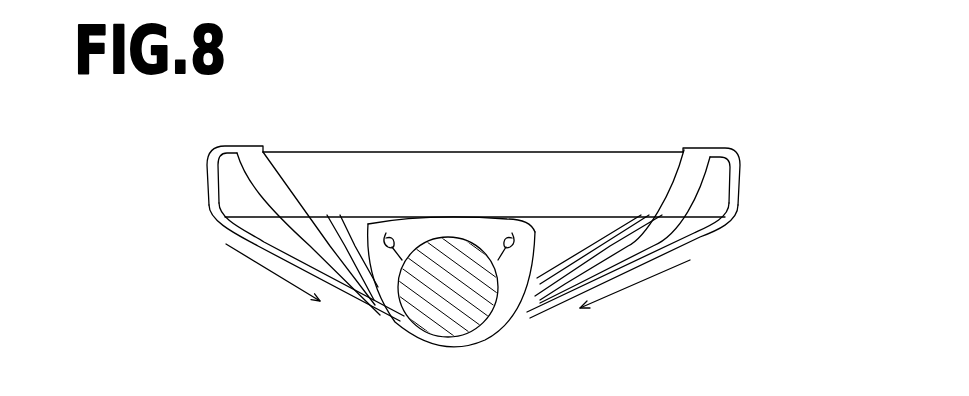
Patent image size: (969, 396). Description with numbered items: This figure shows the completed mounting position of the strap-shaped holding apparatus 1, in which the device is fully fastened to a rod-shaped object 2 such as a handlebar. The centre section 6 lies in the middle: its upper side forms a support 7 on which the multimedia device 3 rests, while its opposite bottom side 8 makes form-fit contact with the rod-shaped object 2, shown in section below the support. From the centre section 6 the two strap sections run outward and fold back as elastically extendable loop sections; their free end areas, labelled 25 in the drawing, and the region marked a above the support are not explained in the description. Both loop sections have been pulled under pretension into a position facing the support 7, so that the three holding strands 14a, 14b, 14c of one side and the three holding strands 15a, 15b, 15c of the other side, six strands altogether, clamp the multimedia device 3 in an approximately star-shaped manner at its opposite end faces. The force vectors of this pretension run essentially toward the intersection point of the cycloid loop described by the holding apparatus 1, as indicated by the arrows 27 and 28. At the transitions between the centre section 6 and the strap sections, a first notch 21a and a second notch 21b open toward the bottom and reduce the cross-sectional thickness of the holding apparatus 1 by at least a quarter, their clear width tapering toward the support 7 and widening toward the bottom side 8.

The holding apparatus 1 is at (276, 297).
The rod-shaped object 2 is at (435, 315).
The multimedia device 3 is at (578, 162).
The centre section 6 is at (418, 232).
The support 7 is at (449, 214).
The bottom side 8 is at (451, 242).
The holding strand 14a is at (598, 238).
The holding strand 14b is at (652, 210).
The holding strand 14c is at (705, 230).
The holding strand 15a is at (334, 232).
The holding strand 15b is at (296, 222).
The holding strand 15c is at (238, 234).
The first notch 21a is at (391, 244).
The second notch 21b is at (516, 250).
The loop portion 25 is at (232, 144).
The arrow 27 is at (331, 324).
The arrow 28 is at (583, 328).
The region a is at (351, 118).